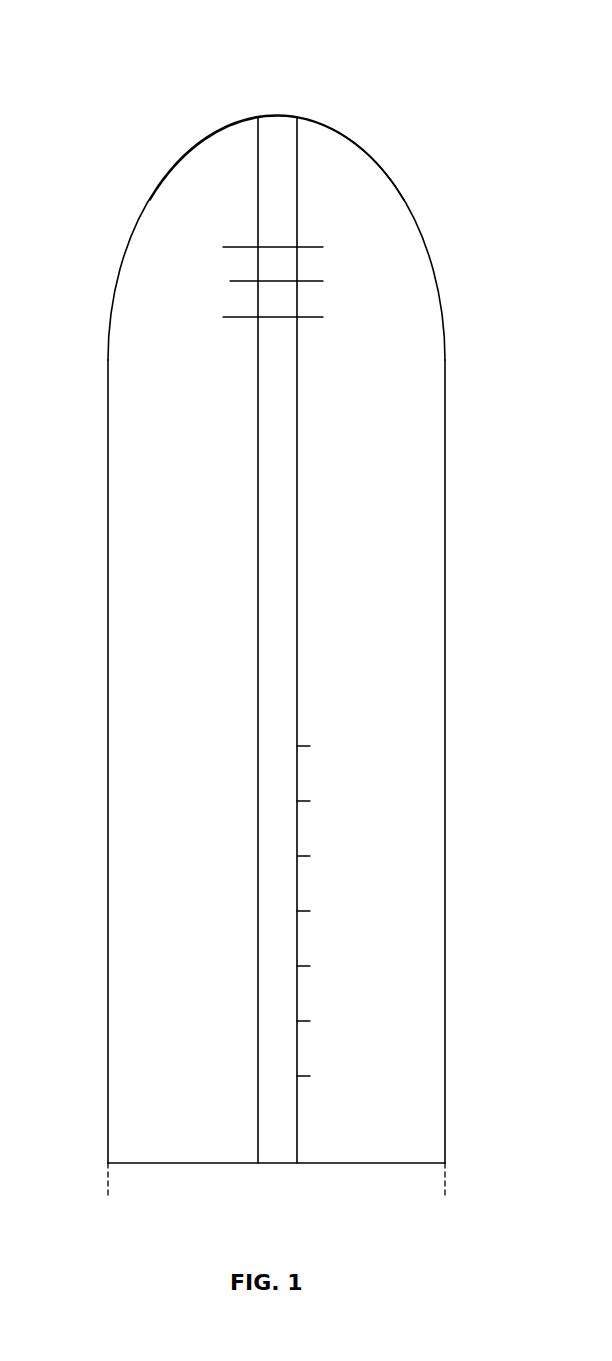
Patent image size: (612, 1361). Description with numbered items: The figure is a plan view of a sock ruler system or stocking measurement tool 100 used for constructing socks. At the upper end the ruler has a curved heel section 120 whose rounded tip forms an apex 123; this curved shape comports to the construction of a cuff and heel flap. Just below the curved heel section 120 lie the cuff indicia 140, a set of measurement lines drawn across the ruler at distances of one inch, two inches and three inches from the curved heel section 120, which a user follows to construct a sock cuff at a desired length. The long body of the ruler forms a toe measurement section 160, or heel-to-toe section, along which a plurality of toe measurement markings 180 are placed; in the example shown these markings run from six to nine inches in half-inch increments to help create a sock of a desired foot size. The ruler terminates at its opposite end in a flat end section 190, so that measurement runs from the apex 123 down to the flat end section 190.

The sock ruler system 100 is at (436, 120).
The curved heel section 120 is at (413, 80).
The apex 123 is at (277, 128).
The cuff indicia 140 is at (222, 247).
The toe measurement section 160 is at (176, 980).
The toe measurement markings 180 is at (357, 740).
The flat end section 190 is at (445, 1197).